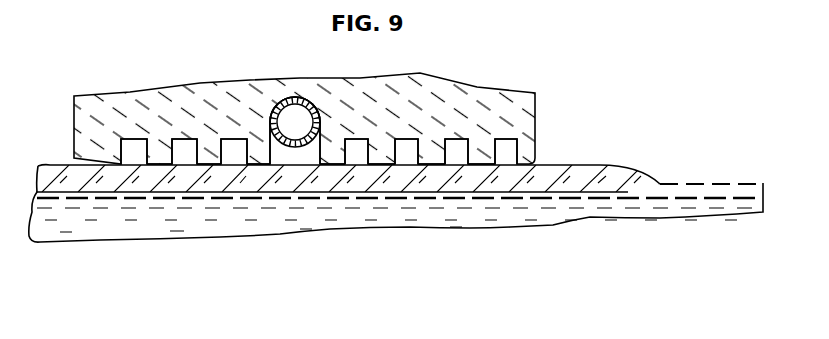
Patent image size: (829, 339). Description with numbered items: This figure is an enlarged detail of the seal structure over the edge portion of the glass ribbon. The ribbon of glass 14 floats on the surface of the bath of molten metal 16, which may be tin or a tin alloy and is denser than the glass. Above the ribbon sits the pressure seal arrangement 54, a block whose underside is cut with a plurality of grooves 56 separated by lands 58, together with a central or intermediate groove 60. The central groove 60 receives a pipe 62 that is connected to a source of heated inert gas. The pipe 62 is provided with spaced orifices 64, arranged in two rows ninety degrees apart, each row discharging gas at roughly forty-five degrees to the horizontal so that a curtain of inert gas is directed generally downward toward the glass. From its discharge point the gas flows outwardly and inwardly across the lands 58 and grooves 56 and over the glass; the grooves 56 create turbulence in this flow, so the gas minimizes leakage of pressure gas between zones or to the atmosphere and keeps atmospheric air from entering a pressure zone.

The ribbon of glass 14 is at (60, 174).
The bath of molten metal 16 is at (97, 222).
The pressure seal arrangement 54 is at (497, 88).
The grooves 56 is at (192, 143).
The lands 58 is at (258, 163).
The central groove 60 is at (315, 152).
The pipe 62 is at (300, 103).
The orifices 64 is at (300, 142).